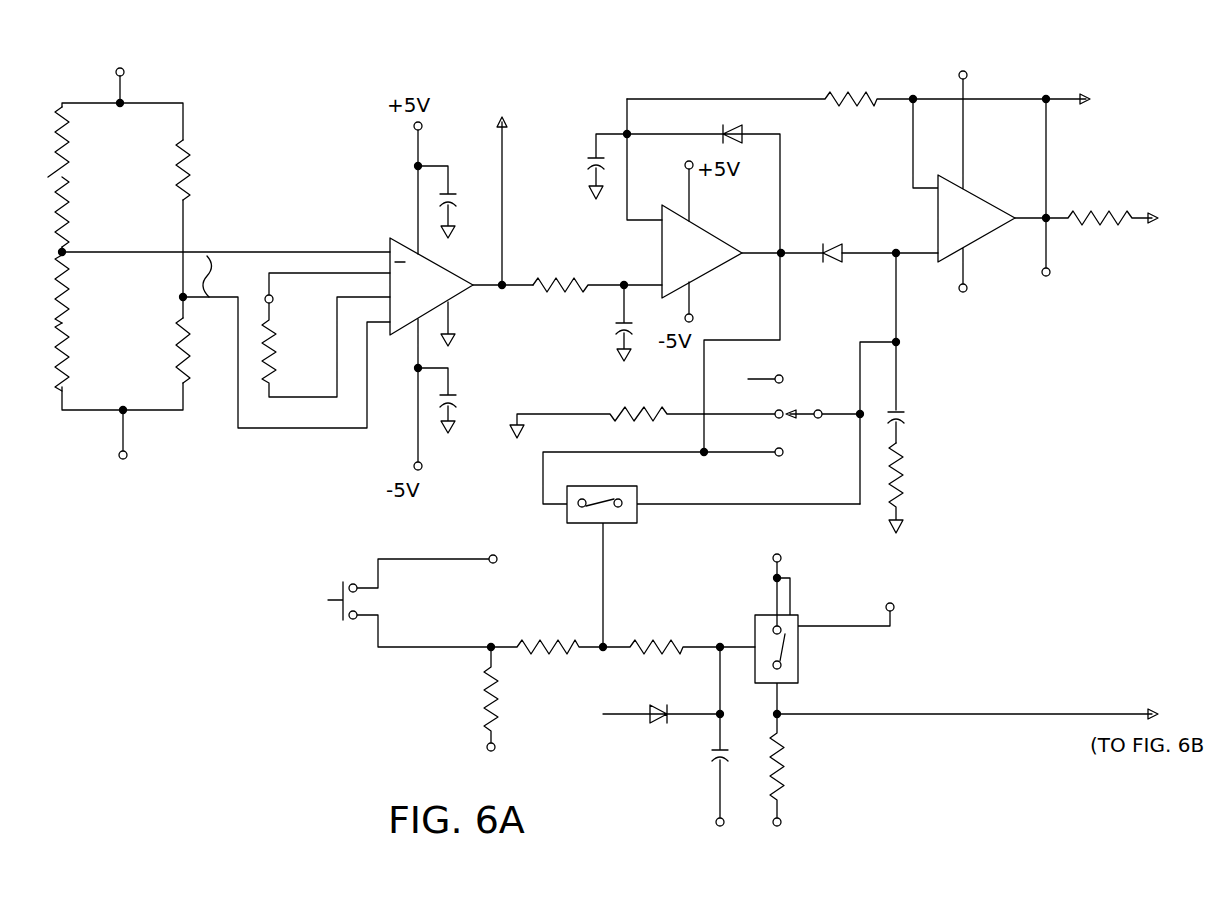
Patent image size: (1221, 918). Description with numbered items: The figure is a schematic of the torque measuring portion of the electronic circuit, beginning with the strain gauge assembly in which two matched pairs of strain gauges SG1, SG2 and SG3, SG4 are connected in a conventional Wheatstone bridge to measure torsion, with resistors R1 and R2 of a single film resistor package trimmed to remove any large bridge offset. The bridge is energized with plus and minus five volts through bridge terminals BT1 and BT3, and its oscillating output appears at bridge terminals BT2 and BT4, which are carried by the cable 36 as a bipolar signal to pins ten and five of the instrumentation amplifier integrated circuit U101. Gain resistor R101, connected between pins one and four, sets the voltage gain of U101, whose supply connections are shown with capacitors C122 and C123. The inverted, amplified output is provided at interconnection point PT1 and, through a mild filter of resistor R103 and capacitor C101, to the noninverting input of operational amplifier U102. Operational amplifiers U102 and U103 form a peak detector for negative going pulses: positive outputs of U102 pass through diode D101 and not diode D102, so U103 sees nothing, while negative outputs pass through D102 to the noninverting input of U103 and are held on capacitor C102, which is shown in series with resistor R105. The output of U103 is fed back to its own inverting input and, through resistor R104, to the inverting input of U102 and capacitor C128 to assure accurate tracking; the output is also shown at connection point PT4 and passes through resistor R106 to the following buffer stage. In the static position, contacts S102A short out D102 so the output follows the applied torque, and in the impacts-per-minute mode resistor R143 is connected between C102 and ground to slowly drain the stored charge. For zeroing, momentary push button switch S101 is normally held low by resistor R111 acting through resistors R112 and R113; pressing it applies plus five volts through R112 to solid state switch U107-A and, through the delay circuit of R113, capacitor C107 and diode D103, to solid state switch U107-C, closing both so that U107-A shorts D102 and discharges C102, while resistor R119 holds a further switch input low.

The bridge terminal BT1 is at (142, 83).
The bridge terminal BT2 is at (199, 252).
The bridge terminal BT3 is at (144, 447).
The bridge terminal BT4 is at (262, 355).
The strain gauge SG1 is at (82, 142).
The strain gauge SG2 is at (85, 357).
The strain gauge SG3 is at (207, 170).
The strain gauge SG4 is at (205, 350).
The resistor R1 is at (78, 212).
The resistor R2 is at (78, 289).
The cable / conductor bundle 36 is at (221, 276).
The gain resistor R101 is at (326, 335).
The instrumentation amplifier integrated circuit U101 is at (420, 282).
The decoupling capacitor C122 is at (461, 202).
The decoupling capacitor C123 is at (461, 400).
The interconnection point PT1 is at (506, 182).
The resistor R103 is at (597, 272).
The capacitor C101 is at (597, 323).
The operational amplifier U102 is at (696, 254).
The capacitor C128 is at (578, 166).
The diode D101 is at (723, 181).
The resistor R104 is at (836, 86).
The diode D102 is at (848, 217).
The operational amplifier U103 is at (965, 195).
The test point PT4 (to FIG. 5) PT4 is at (1120, 175).
The resistor R106 is at (1107, 223).
The capacitor C102 is at (926, 348).
The resistor R105 is at (926, 488).
The resistor R143 is at (607, 409).
The contacts of ganged switch S102A is at (782, 406).
The solid state switch U107-A is at (701, 549).
The switch S101 is at (404, 589).
The resistor R111 is at (468, 714).
The resistor R112 is at (547, 633).
The resistor R113 is at (679, 634).
The diode D103 is at (661, 724).
The capacitor C107 is at (696, 752).
The solid state switch U107-C is at (847, 624).
The resistor R119 is at (801, 785).